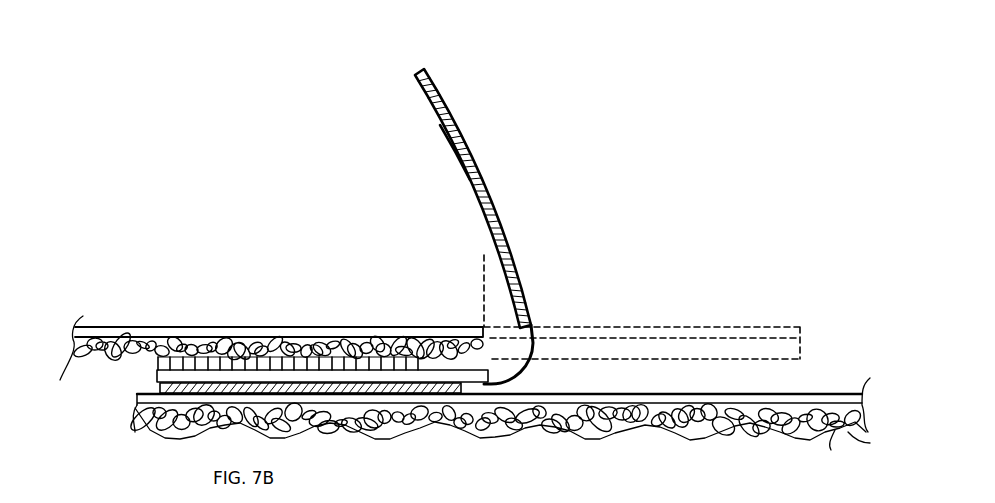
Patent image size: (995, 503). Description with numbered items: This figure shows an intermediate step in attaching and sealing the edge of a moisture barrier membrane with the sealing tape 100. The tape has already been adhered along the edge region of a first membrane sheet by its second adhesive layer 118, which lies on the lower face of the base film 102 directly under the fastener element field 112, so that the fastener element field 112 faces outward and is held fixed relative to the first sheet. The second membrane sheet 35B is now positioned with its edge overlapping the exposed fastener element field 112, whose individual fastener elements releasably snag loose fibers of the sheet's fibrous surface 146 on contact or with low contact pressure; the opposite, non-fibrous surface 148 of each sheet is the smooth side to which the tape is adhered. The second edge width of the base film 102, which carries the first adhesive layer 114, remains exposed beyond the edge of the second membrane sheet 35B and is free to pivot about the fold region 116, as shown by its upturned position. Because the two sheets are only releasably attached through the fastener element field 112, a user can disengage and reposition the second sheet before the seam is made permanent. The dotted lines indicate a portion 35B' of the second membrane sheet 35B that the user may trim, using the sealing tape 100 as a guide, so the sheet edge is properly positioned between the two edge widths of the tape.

The sealing tape 100 is at (486, 120).
The base film 102 is at (420, 63).
The first adhesive layer 114 is at (435, 145).
The fold region 116 is at (537, 376).
The second membrane sheet 35B is at (80, 314).
The portion of the second membrane sheet 35B' is at (642, 307).
The non-fibrous surface 148 is at (122, 326).
The fibrous surface 146 is at (90, 360).
The fastener element field 112 is at (142, 364).
The second adhesive layer 118 is at (142, 388).